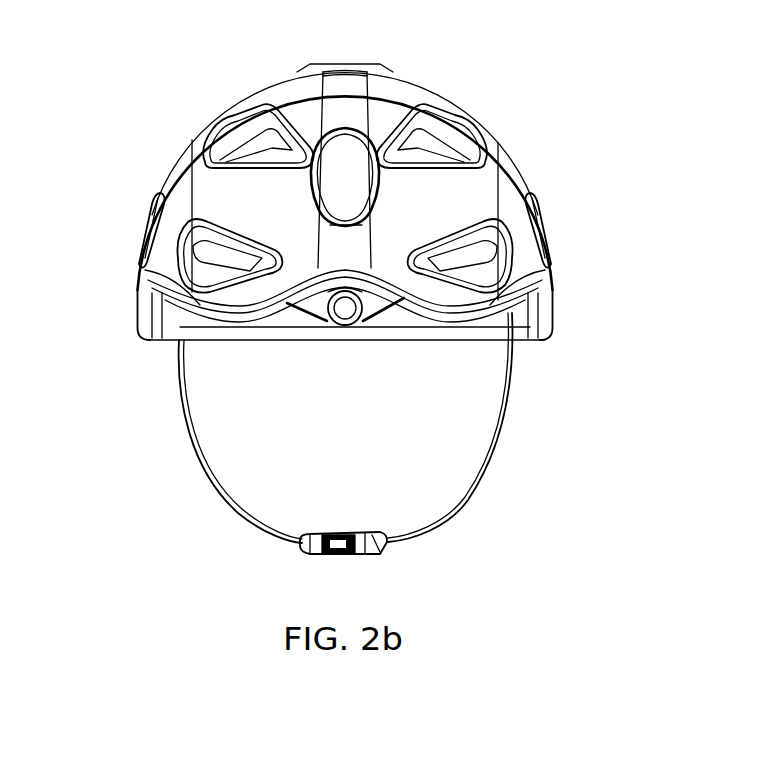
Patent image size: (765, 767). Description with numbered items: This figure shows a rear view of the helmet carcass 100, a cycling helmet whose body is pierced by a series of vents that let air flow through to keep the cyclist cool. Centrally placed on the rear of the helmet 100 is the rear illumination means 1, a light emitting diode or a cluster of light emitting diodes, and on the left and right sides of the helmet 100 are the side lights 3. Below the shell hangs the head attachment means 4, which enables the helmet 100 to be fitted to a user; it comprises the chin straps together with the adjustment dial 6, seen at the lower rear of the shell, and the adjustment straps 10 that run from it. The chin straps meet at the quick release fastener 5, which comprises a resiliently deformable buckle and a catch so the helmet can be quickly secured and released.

The helmet carcass 100 is at (344, 296).
The rear illumination means 1 is at (338, 157).
The side lights 3 is at (148, 240).
The head attachment means 4 is at (346, 428).
The quick release fastener 5 is at (343, 562).
The adjustment dial 6 is at (353, 330).
The adjustment straps 10 is at (380, 313).